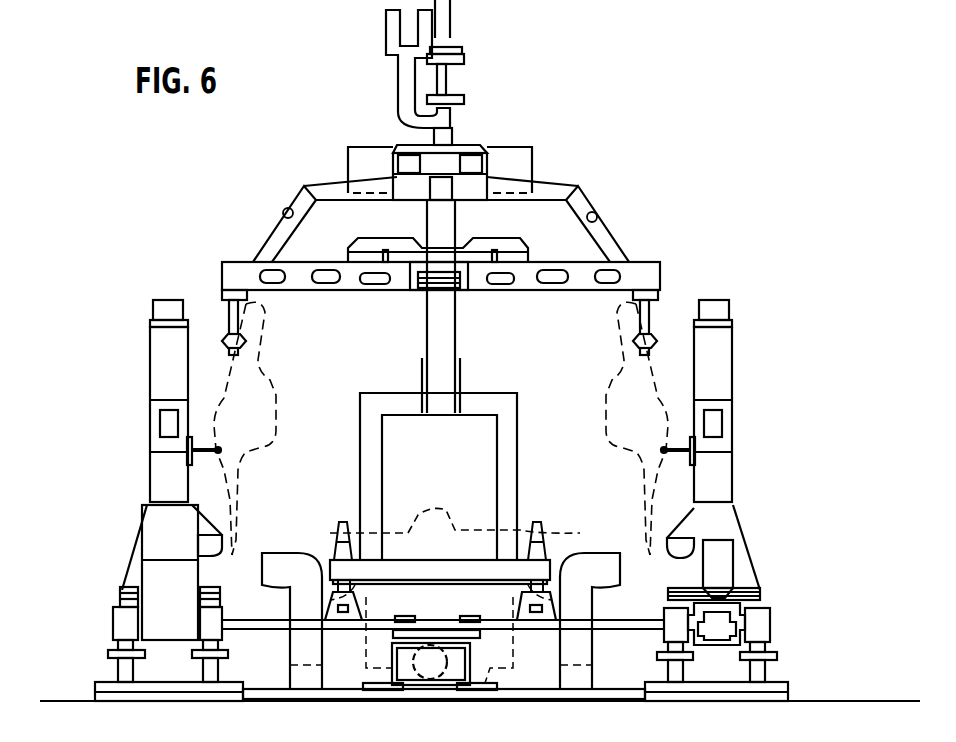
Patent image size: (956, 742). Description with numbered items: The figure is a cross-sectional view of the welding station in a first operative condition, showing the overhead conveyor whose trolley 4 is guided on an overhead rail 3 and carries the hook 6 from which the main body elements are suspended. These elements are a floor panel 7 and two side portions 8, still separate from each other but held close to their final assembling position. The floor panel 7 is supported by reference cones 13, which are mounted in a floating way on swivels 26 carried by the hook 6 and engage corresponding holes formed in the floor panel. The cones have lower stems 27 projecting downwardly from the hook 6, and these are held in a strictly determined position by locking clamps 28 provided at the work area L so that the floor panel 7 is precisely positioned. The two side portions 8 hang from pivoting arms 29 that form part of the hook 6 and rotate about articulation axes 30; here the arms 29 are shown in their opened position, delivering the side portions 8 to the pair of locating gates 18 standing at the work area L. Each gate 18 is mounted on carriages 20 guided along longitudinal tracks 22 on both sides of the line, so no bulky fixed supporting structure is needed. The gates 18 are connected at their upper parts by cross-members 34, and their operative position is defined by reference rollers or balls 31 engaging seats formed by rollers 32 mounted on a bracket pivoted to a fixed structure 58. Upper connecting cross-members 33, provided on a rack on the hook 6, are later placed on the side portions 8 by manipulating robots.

The overhead rail 3 is at (443, 80).
The trolley 4 is at (405, 80).
The hook 6 is at (560, 186).
The floor panel 7 is at (314, 546).
The side portions 8 is at (270, 372).
The reference cones 13 is at (343, 526).
The locating gates 18 is at (160, 353).
The carriages 20 is at (113, 612).
The tracks 22 is at (140, 652).
The swivels 26 is at (386, 524).
The lower stems 27 is at (360, 588).
The locking clamps 28 is at (470, 604).
The pivoting arms 29 is at (268, 241).
The articulation axes 30 is at (285, 209).
The reference rollers or balls 31 is at (214, 543).
The rollers 32 is at (278, 550).
The upper connecting cross-members 33 is at (518, 249).
The cross-members 34 is at (300, 285).
The fixed structure 58 is at (284, 572).
The work area L is at (493, 372).